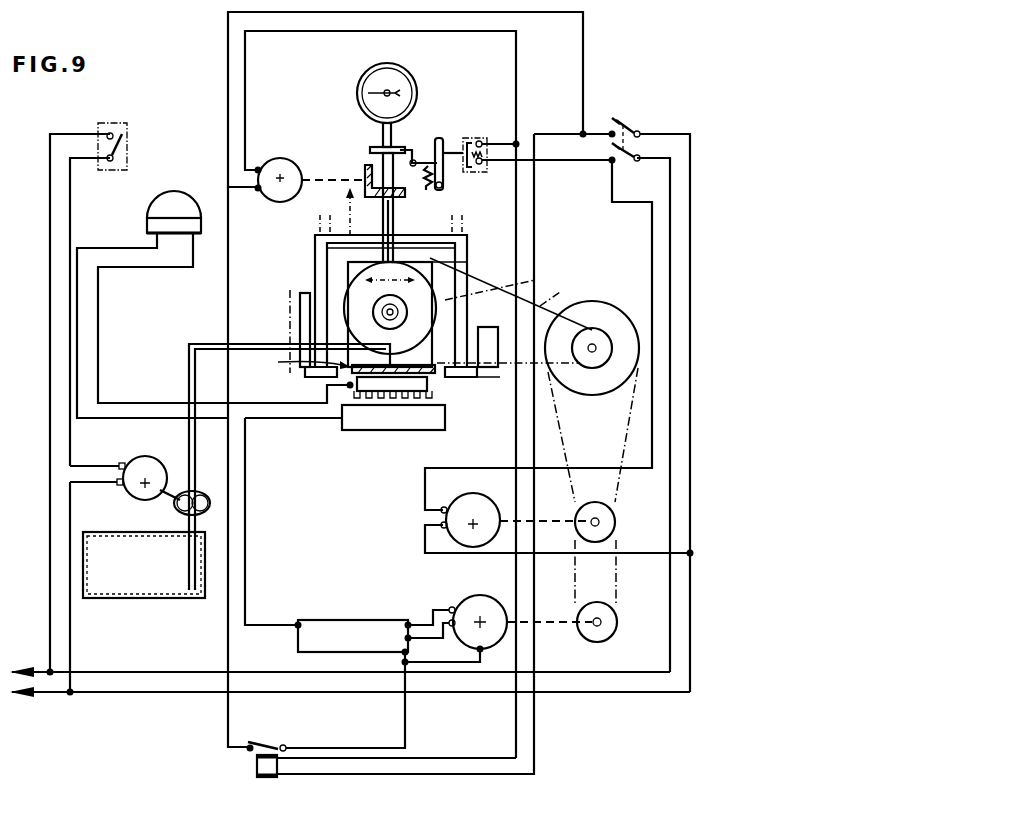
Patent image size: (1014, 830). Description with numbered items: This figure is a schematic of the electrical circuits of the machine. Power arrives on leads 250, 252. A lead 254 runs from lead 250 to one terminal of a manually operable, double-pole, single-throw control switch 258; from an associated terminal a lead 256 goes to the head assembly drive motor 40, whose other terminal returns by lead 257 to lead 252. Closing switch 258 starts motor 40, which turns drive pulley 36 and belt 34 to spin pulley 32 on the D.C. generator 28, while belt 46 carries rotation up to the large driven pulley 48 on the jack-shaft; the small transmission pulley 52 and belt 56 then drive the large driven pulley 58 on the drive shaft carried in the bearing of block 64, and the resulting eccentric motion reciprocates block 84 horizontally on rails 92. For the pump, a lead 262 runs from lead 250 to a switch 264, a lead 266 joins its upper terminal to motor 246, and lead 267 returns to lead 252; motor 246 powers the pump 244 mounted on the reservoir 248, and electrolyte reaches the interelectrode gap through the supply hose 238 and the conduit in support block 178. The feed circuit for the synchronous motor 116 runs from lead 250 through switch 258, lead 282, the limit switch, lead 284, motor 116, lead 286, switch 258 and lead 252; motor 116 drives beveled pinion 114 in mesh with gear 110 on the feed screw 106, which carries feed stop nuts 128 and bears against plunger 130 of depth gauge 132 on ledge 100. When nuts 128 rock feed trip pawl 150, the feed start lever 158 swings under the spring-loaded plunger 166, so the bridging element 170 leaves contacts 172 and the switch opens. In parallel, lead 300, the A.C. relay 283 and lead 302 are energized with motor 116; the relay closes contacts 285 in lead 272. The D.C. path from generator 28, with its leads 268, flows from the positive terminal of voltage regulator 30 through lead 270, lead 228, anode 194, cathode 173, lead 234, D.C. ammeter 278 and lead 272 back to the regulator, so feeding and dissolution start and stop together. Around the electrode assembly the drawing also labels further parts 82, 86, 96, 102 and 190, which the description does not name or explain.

The D.C. generator 28 is at (480, 597).
The voltage regulator 30 is at (358, 620).
The pulley 32 is at (605, 633).
The belt 34 is at (620, 598).
The drive pulley 36 is at (610, 510).
The electric motor 40 is at (505, 490).
The belt 46 is at (635, 440).
The driven pulley 48 is at (585, 304).
The transmission pulley 52 is at (606, 330).
The belt 56 is at (565, 289).
The driven pulley 58 is at (440, 268).
The block 64 is at (290, 302).
The wheel 82 is at (420, 312).
The block 84 is at (467, 243).
The frame member 86 is at (464, 262).
The rails 92 is at (445, 326).
The guide post 96 is at (462, 236).
The ledge 100 is at (330, 249).
The electrical lead 102 is at (497, 385).
The feed screw 106 is at (394, 218).
The gear 110 is at (408, 196).
The beveled drive pinion 114 is at (366, 175).
The synchronous electric motor 116 is at (300, 140).
The feed stop nuts 128 is at (414, 158).
The plunger 130 is at (357, 187).
The depth gauge 132 is at (413, 90).
The feed trip pawl 150 is at (462, 127).
The feed start lever 158 is at (455, 150).
The spring-loaded plunger 166 is at (490, 166).
The bridging element 170 is at (478, 166).
The contacts 172 is at (495, 164).
The cathode 173 is at (295, 363).
The support block 178 is at (435, 384).
The anode 190 is at (362, 431).
The anode 194 is at (400, 431).
The lead 228 is at (276, 515).
The lead 234 is at (300, 418).
The electrolyte supply hose 238 is at (222, 322).
The pump 244 is at (212, 508).
The motor 246 is at (165, 447).
The reservoir 248 is at (185, 600).
The lead 250 is at (45, 672).
The lead 252 is at (692, 616).
The lead 254 is at (97, 672).
The lead 256 is at (500, 468).
The lead 257 is at (625, 553).
The control switch 258 is at (636, 120).
The lead 262 is at (50, 490).
The switch 264 is at (127, 145).
The lead 266 is at (70, 218).
The lead 267 is at (72, 523).
The leads 268 is at (420, 628).
The lead 270 is at (284, 620).
The lead 272 is at (405, 718).
The D.C. ammeter 278 is at (205, 225).
The lead 282 is at (590, 165).
The A.C. relay 283 is at (257, 772).
The lead 284 is at (516, 60).
The contacts 285 is at (250, 752).
The lead 286 is at (228, 98).
The lead 300 is at (496, 758).
The lead 302 is at (470, 776).